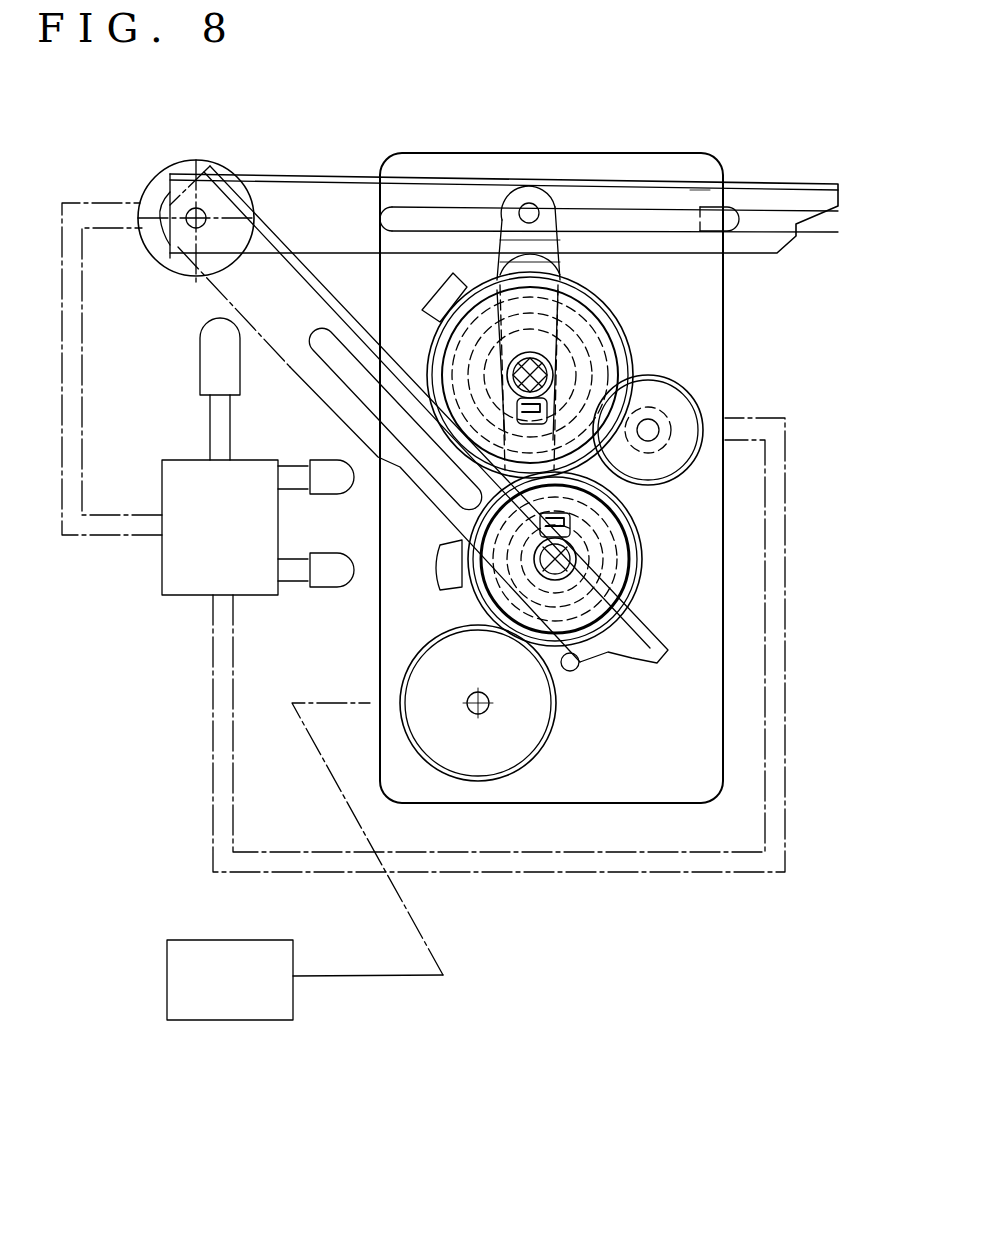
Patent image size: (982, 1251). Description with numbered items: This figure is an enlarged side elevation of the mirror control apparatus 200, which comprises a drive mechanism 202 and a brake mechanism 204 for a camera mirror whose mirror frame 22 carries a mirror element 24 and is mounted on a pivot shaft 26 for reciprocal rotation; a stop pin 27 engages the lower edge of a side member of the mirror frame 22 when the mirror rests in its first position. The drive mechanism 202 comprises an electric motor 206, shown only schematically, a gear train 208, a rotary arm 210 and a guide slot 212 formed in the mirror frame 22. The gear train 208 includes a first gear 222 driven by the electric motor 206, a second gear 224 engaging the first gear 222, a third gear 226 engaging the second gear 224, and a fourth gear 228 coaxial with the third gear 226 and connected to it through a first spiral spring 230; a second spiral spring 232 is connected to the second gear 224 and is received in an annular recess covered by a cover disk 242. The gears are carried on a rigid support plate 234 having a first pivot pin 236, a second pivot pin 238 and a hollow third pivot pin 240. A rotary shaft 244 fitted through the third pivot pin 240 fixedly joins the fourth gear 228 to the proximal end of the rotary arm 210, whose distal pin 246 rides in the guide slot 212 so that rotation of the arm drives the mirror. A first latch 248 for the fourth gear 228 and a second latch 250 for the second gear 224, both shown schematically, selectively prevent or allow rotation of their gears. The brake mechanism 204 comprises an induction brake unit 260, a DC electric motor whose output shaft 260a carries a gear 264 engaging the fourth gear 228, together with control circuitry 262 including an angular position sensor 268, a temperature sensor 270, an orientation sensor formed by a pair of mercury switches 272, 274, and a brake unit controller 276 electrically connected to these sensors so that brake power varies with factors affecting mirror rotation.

The mirror frame 22 is at (752, 254).
The mirror element 24 is at (752, 183).
The pivot shaft 26 is at (182, 210).
The stop pin 27 is at (578, 668).
The mirror control apparatus 200 is at (733, 941).
The drive mechanism 202 is at (543, 890).
The brake mechanism 204 is at (815, 382).
The electric motor 206 is at (240, 1022).
The gear train 208 is at (398, 612).
The rotary arm 210 is at (500, 218).
The guide slot 212 is at (738, 214).
The first gear 222 is at (548, 750).
The second gear 224 is at (628, 660).
The third gear 226 is at (634, 300).
The fourth gear 228 is at (600, 295).
The first spiral spring 230 is at (555, 360).
The second spiral spring 232 is at (640, 548).
The support plate 234 is at (660, 152).
The first pivot pin 236 is at (500, 685).
The second pivot pin 238 is at (634, 585).
The third pivot pin 240 is at (614, 400).
The cover disk 242 is at (630, 528).
The rotary shaft 244 is at (510, 368).
The pin 246 is at (555, 205).
The first latch 248 is at (445, 290).
The second latch 250 is at (440, 565).
The induction brake unit 260 is at (685, 398).
The output shaft 260a is at (655, 435).
The control circuitry 262 is at (108, 575).
The gear 264 is at (700, 412).
The angular position sensor 268 is at (212, 165).
The temperature sensor 270 is at (198, 357).
The mercury switch 272 is at (318, 458).
The mercury switch 274 is at (320, 551).
The brake unit controller 276 is at (178, 598).